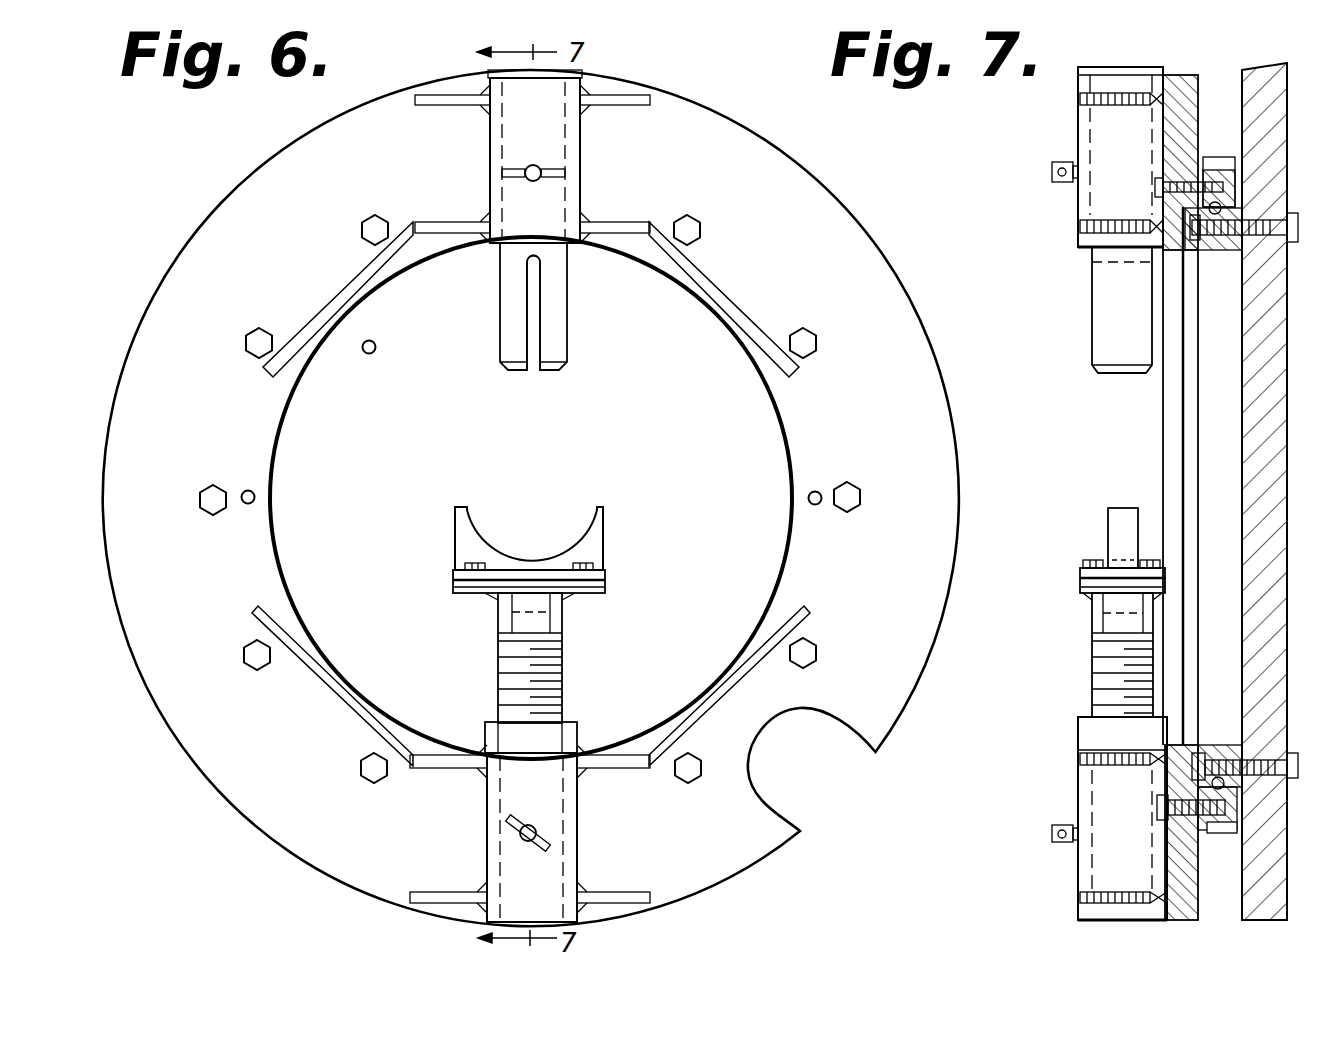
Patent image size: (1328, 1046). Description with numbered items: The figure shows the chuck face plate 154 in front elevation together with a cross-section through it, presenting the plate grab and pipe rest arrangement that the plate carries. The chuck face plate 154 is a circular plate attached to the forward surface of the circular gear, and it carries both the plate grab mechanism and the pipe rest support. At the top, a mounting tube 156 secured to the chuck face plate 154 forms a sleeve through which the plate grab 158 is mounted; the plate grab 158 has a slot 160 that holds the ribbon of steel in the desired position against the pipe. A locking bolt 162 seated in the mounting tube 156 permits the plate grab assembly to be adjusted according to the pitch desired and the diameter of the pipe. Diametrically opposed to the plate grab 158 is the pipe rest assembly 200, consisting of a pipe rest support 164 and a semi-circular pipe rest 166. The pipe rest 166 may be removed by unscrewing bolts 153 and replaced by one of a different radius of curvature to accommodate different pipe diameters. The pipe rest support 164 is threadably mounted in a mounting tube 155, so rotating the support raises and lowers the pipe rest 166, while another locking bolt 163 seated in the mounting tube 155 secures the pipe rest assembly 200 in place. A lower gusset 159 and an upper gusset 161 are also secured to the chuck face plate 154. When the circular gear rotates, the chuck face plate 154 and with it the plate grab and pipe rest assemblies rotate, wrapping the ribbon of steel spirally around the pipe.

In FIG. 6, the bolts 153 is at (475, 563).
In FIG. 7, the bolts 153 is at (1080, 565).
In FIG. 7, the chuck face plate 154 is at (1163, 418).
In FIG. 6, the mounting tube 155 is at (555, 735).
In FIG. 7, the mounting tube 155 is at (1080, 886).
In FIG. 6, the mounting tube 156 is at (575, 128).
In FIG. 7, the mounting tube 156 is at (1078, 128).
In FIG. 6, the plate grab 158 is at (560, 299).
In FIG. 7, the plate grab 158 is at (1090, 323).
In FIG. 6, the lower gusset 159 is at (627, 752).
In FIG. 6, the slot 160 is at (533, 372).
In FIG. 6, the upper gusset 161 is at (725, 326).
In FIG. 6, the locking bolt 162 is at (541, 177).
In FIG. 7, the locking bolt 162 is at (1050, 172).
In FIG. 6, the locking bolt 163 is at (510, 838).
In FIG. 7, the locking bolt 163 is at (1050, 834).
In FIG. 6, the pipe rest support 164 is at (498, 658).
In FIG. 7, the pipe rest support 164 is at (1088, 606).
In FIG. 6, the pipe rest 166 is at (582, 527).
In FIG. 7, the pipe rest 166 is at (1106, 500).
In FIG. 6, the pipe rest assembly 200 is at (608, 595).